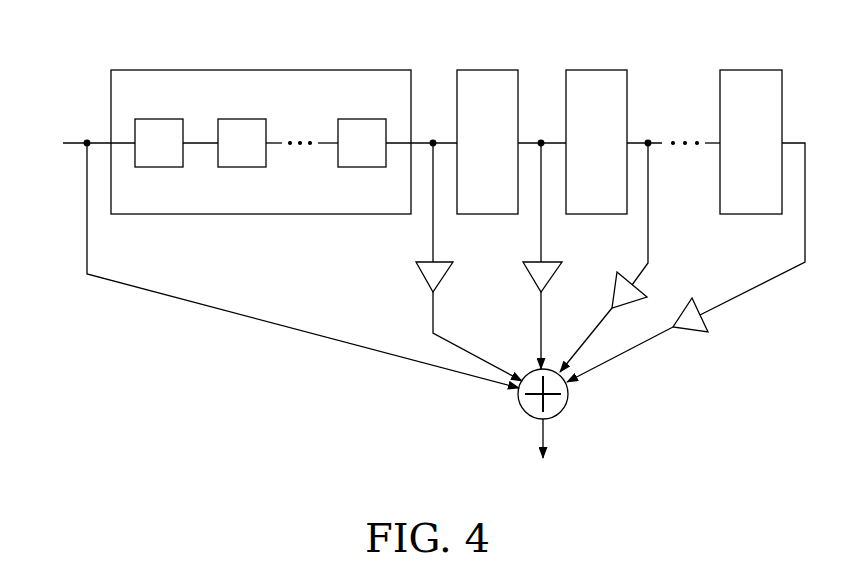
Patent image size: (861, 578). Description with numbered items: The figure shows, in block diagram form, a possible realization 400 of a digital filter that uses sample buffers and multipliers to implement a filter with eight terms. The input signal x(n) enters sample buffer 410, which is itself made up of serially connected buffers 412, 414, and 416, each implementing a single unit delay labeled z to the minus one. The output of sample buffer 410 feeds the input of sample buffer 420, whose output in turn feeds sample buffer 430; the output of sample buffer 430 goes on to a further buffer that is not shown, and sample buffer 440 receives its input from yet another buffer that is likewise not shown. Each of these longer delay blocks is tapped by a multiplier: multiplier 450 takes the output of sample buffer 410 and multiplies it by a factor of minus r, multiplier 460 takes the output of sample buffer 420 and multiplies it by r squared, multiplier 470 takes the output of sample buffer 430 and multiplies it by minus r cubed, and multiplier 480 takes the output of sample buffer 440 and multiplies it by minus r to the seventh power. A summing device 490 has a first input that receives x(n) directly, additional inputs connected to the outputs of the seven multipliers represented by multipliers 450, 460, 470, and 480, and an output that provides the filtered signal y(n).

The digital filter realization 400 is at (294, 500).
The sample buffer 410 is at (197, 70).
The buffer 412 is at (165, 119).
The buffer 414 is at (247, 119).
The buffer 416 is at (369, 119).
The sample buffer 420 is at (489, 70).
The sample buffer 430 is at (595, 70).
The sample buffer 440 is at (750, 70).
The multiplier 450 is at (417, 265).
The multiplier 460 is at (522, 265).
The multiplier 470 is at (616, 276).
The multiplier 480 is at (693, 299).
The summing device 490 is at (518, 400).